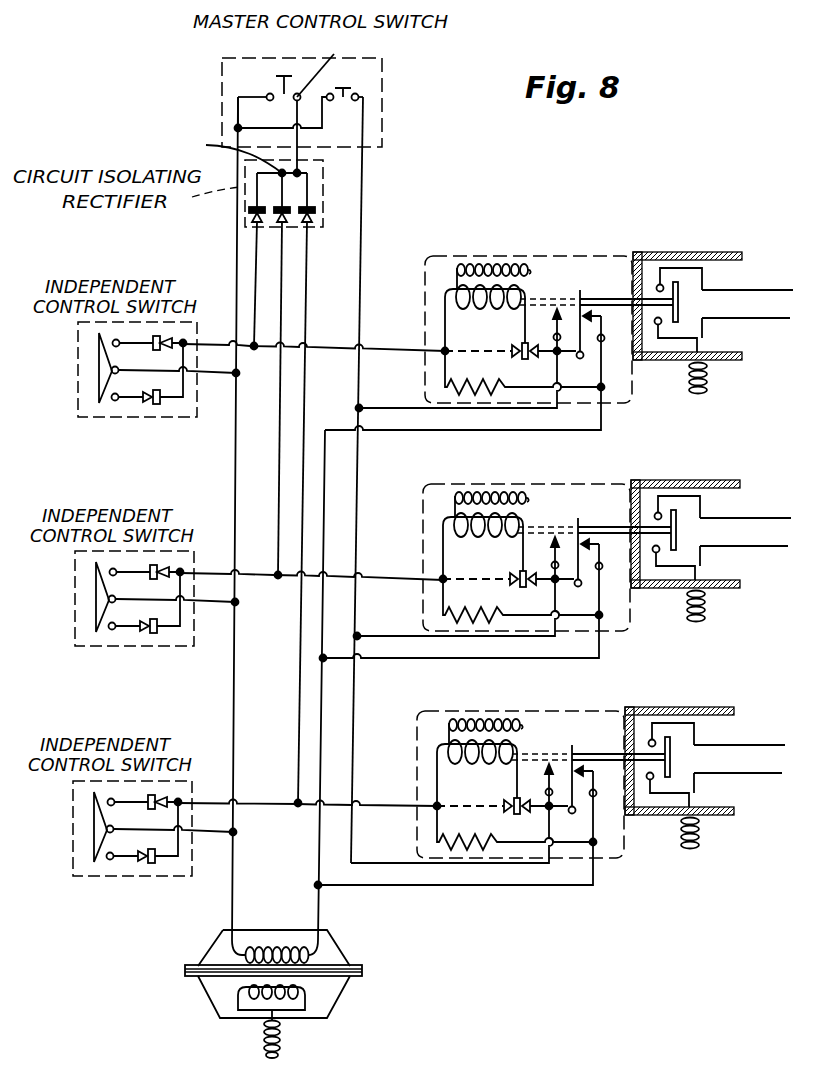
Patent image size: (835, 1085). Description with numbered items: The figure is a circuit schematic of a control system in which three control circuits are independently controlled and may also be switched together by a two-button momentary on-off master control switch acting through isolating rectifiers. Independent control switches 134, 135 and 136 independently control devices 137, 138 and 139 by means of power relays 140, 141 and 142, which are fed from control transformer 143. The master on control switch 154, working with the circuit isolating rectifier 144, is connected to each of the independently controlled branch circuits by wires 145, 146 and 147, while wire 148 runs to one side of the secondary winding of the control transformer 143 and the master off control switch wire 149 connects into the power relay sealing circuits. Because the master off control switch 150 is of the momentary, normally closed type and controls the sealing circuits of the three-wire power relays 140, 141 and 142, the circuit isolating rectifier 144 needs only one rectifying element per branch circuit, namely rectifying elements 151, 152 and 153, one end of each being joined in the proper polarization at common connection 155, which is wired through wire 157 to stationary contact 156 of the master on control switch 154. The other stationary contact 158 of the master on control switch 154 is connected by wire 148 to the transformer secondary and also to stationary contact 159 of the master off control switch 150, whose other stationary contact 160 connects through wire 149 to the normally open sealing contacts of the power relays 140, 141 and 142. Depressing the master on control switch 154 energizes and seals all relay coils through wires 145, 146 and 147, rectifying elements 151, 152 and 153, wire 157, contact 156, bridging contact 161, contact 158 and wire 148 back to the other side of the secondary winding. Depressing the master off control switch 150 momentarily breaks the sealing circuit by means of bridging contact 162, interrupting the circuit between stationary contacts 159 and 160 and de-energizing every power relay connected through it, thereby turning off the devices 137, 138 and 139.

The independent control switch 134 is at (143, 419).
The independent control switch 135 is at (123, 647).
The independent control switch 136 is at (123, 876).
The device 137 is at (739, 304).
The device 138 is at (737, 532).
The device 139 is at (731, 759).
The power relay 140 is at (566, 257).
The power relay 141 is at (579, 470).
The power relay 142 is at (492, 713).
The control transformer 143 is at (383, 63).
The circuit isolating rectifier 144 is at (323, 192).
The wire 145 is at (255, 320).
The wire 146 is at (281, 262).
The wire 147 is at (303, 291).
The wire 148 is at (236, 270).
The master off control switch wire 149 is at (360, 283).
The master off control switch 150 is at (360, 90).
The rectifying element 151 is at (250, 211).
The rectifying element 152 is at (282, 222).
The rectifying element 153 is at (315, 210).
The master on control switch 154 is at (236, 89).
The common connection 155 is at (241, 153).
The stationary contact 156 is at (333, 70).
The wire 157 is at (335, 153).
The stationary contact 158 is at (268, 100).
The stationary contact 159 is at (343, 100).
The stationary contact 160 is at (360, 98).
The bridging contact 161 is at (291, 75).
The bridging contact 162 is at (352, 102).